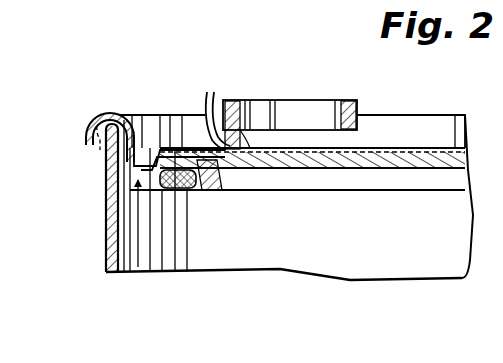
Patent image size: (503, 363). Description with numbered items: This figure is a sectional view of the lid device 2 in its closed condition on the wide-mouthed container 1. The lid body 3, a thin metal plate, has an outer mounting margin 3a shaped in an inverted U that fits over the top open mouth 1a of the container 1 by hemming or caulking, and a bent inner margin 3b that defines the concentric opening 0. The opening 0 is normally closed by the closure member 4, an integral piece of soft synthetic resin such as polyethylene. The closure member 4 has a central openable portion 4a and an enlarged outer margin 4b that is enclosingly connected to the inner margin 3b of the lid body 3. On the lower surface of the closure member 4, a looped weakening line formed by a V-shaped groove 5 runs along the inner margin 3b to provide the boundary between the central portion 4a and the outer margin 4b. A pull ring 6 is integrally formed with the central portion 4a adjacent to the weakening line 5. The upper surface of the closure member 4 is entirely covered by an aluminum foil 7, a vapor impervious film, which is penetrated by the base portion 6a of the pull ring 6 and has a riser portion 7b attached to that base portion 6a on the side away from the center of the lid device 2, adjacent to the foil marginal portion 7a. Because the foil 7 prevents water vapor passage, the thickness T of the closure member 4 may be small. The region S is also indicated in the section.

The wide-mouthed container 1 is at (104, 213).
The top open mouth 1a is at (99, 146).
The lid device 2 is at (183, 103).
The lid body 3 is at (110, 233).
The outer mounting margin 3a is at (103, 112).
The bent inner margin 3b is at (176, 273).
The closure member 4 is at (390, 173).
The central openable portion 4a is at (348, 168).
The enlarged outer margin 4b is at (162, 272).
The V-shaped groove 5 is at (237, 191).
The pull ring 6 is at (317, 117).
The base portion 6a is at (266, 116).
The aluminum foil 7 is at (442, 128).
The foil marginal portion 7a is at (160, 112).
The riser portion 7b is at (203, 120).
The opening 0 is at (195, 191).
The space S is at (91, 115).
The thickness T is at (428, 140).